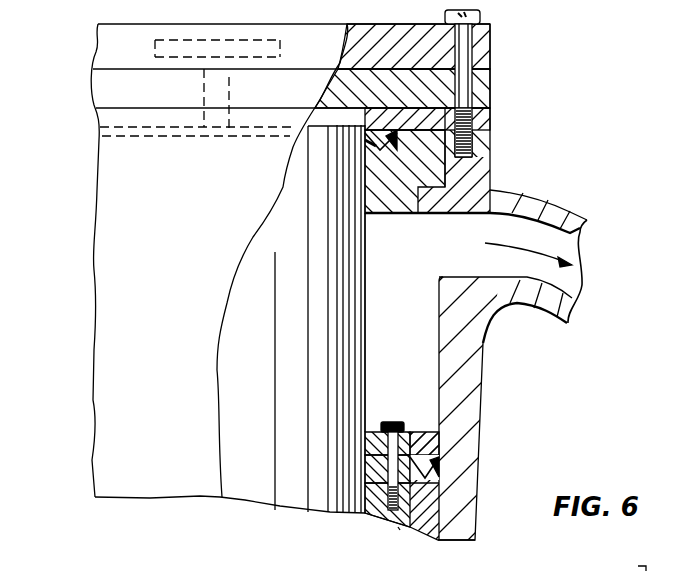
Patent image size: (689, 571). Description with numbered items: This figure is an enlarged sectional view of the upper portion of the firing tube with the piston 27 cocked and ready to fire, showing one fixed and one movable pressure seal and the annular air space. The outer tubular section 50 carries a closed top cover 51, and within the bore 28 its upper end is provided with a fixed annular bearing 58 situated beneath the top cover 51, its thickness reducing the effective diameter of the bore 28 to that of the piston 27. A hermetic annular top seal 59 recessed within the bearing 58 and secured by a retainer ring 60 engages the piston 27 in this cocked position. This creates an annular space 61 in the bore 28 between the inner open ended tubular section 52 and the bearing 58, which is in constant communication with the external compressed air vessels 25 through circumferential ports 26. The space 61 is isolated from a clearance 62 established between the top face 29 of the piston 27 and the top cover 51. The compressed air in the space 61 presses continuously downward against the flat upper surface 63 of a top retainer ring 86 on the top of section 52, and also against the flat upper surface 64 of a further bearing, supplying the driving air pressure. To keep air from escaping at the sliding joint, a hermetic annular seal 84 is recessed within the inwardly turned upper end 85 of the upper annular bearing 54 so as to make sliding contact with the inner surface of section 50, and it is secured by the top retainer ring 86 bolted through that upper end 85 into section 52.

The top cover 51 is at (125, 45).
The piston 27 is at (246, 478).
The top face 29 is at (352, 118).
The hermetic annular top seal 59 is at (363, 135).
The retainer ring 60 is at (486, 118).
The fixed annular bearing 58 is at (476, 176).
The clearance 62 is at (363, 140).
The outer tubular section 50 is at (492, 178).
The circumferential ports 26 is at (538, 194).
The compressed air vessels 25 is at (479, 245).
The bore 28 is at (437, 343).
The annular space 61 is at (407, 367).
The flat upper surface 63 is at (430, 428).
The inwardly turned upper end 85 is at (380, 467).
The upper annular bearing 54 is at (473, 504).
The hermetic annular seal 84 is at (440, 468).
The top retainer ring 86 is at (420, 432).
The inner open ended tubular section 52 is at (396, 527).
The flat upper surface 64 is at (630, 564).